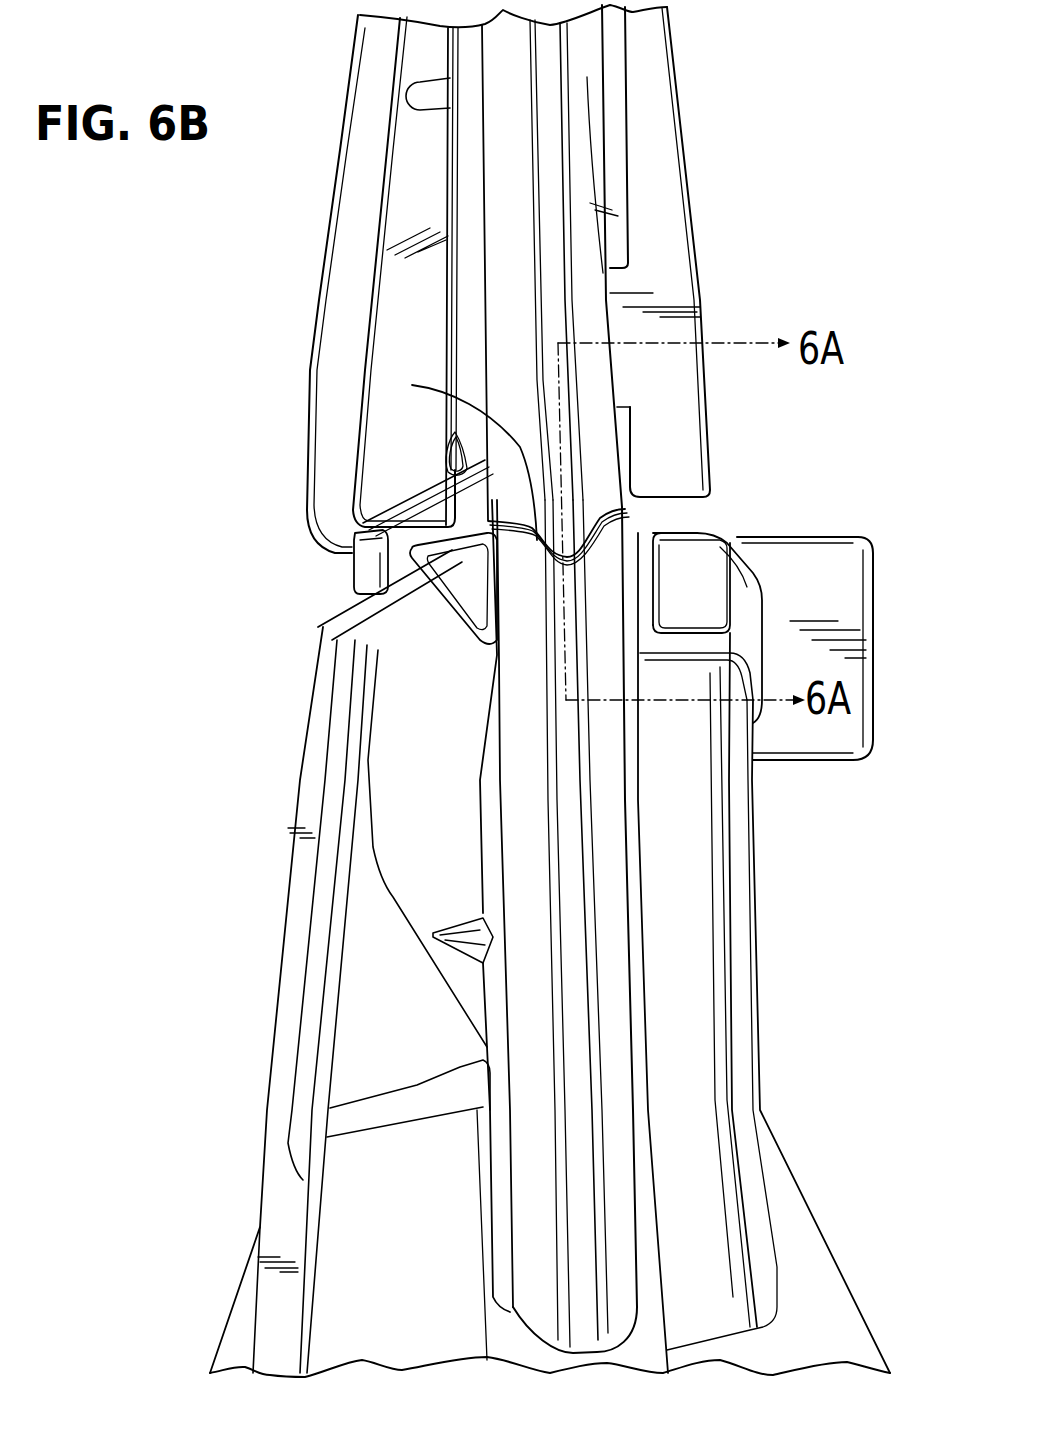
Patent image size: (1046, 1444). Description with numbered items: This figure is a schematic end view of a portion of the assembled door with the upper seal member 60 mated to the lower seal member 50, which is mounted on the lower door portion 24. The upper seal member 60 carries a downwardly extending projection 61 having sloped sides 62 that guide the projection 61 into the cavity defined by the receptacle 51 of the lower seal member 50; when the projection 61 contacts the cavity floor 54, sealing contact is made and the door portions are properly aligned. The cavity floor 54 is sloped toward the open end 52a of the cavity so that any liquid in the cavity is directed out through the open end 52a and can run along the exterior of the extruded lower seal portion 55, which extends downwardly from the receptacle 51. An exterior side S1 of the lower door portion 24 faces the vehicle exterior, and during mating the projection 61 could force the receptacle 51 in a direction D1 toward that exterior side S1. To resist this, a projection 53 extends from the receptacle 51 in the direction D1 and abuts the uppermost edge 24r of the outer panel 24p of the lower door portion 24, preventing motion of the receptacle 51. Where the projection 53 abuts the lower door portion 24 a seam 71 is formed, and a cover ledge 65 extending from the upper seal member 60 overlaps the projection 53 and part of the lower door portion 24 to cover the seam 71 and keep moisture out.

The upper seal member 60 is at (592, 276).
The upper seal member projection 61 is at (565, 513).
The sloped side 62 is at (460, 457).
The cover ledge 65 is at (423, 510).
The direction D1 is at (377, 438).
The uppermost edge 24r is at (355, 533).
The seam 71 is at (380, 587).
The lower seal member projection 53 is at (363, 630).
The lower seal member 50 is at (610, 532).
The receptacle 51 is at (603, 563).
The cavity floor 54 is at (563, 557).
The open end of receptacle cavity 52a is at (555, 572).
The outer panel 24p is at (307, 735).
The exterior side S1 is at (283, 883).
The extruded lower seal portion 55 is at (603, 858).
The lower door portion 24 is at (720, 1065).